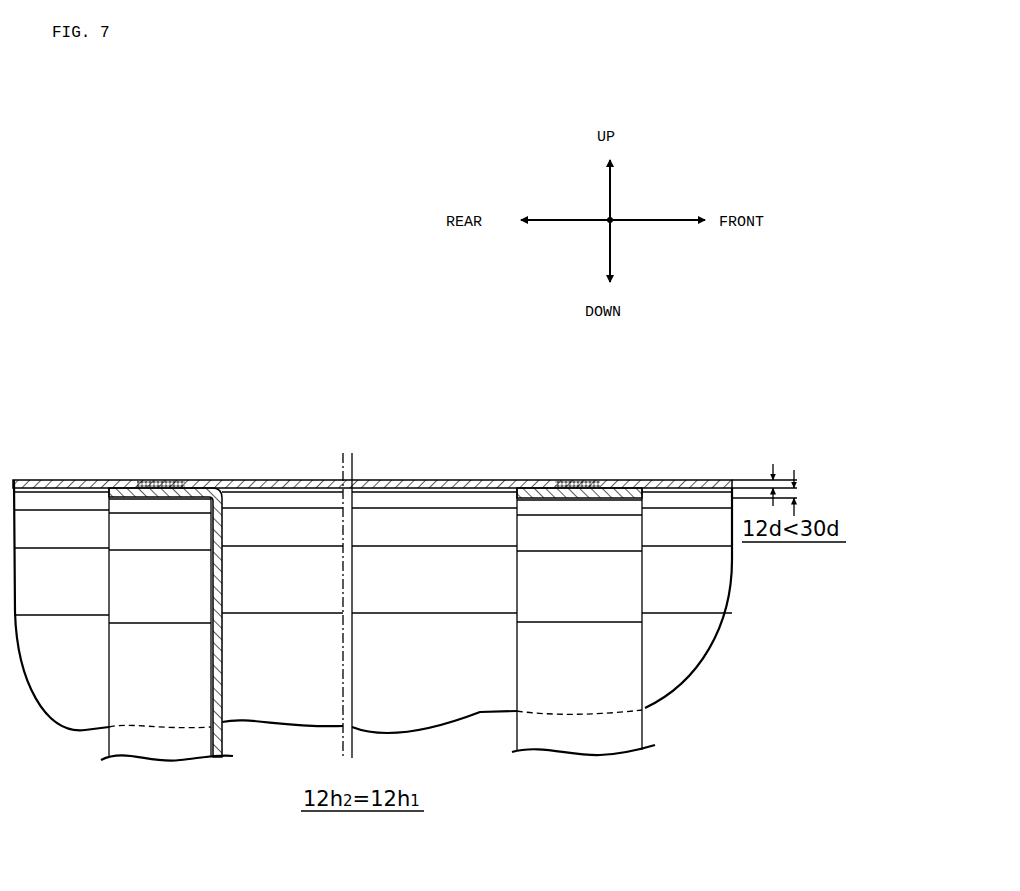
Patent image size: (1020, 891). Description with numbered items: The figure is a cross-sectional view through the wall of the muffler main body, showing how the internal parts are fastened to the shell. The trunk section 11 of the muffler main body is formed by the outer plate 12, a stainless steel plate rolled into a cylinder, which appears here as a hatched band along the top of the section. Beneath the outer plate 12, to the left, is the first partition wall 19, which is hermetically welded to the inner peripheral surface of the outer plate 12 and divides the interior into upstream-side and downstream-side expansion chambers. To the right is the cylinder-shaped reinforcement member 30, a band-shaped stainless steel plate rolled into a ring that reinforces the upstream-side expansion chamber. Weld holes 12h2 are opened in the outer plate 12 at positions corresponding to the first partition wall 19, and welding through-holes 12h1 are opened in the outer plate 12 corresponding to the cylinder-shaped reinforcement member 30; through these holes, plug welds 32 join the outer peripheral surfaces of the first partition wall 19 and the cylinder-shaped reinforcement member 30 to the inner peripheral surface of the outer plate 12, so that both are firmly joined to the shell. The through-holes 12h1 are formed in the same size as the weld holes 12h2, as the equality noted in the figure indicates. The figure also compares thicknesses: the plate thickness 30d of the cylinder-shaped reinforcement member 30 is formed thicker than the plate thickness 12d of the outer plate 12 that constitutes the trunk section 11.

The trunk section 11 is at (72, 472).
The outer plate 12 is at (400, 478).
The weld holes 12h2 is at (178, 480).
The welding through-holes 12h1 is at (594, 480).
The plate thickness of the outer plate 12d is at (772, 482).
The first partition wall 19 is at (165, 747).
The cylinder-shaped reinforcement member 30 is at (582, 735).
The plate thickness of the cylinder-shaped reinforcement member 30d is at (795, 498).
The plug welds 32 is at (160, 480).